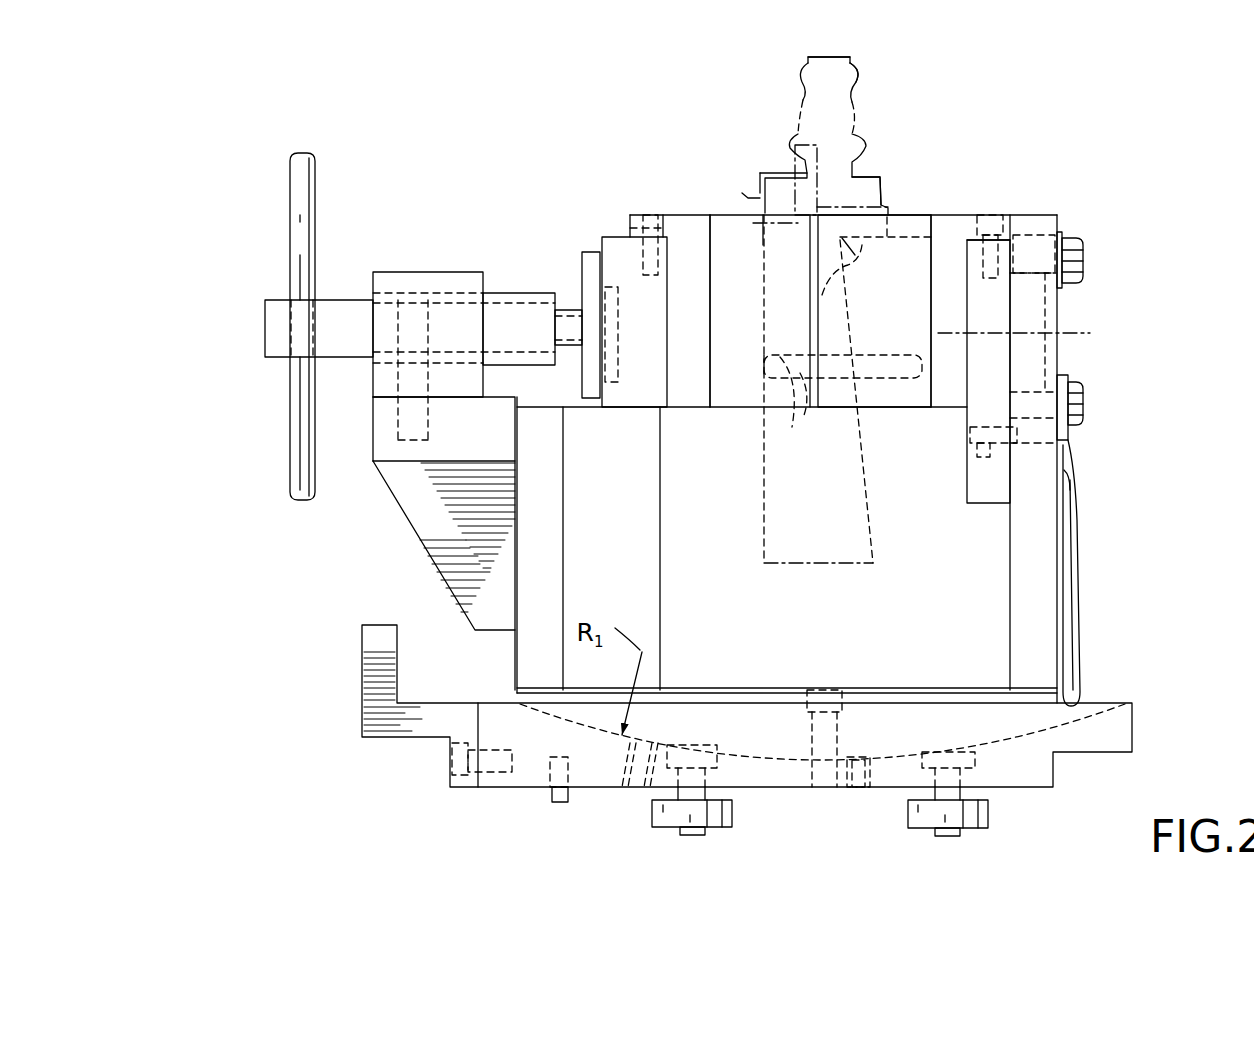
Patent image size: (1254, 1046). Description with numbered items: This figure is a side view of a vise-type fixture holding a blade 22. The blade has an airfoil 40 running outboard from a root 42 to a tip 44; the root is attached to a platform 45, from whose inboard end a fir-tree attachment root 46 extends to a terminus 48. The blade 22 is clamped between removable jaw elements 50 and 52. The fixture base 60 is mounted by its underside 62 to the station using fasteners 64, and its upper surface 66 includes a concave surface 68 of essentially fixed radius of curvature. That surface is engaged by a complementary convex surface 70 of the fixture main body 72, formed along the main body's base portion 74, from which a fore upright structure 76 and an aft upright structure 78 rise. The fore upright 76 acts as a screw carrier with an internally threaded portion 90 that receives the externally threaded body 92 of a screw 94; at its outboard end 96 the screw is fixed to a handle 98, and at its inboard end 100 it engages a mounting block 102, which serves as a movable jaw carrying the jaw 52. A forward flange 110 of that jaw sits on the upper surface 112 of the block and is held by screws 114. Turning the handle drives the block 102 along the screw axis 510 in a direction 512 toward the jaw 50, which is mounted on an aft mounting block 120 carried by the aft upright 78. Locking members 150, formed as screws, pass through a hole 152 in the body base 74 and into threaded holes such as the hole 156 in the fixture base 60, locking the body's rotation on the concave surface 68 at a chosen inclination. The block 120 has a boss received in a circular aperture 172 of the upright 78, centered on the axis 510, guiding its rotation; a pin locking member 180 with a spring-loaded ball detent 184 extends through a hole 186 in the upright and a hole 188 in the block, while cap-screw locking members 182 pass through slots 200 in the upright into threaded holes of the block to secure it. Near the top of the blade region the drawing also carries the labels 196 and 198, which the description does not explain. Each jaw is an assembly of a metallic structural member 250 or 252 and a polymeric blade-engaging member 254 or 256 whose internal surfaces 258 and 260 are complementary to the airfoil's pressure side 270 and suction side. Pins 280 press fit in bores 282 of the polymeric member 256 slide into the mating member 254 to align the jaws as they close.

The blade 22 is at (885, 108).
The airfoil 40 is at (873, 565).
The root 42 is at (845, 240).
The tip 44 is at (842, 565).
The platform 45 is at (880, 205).
The attachment root 46 is at (848, 130).
The terminus 48 is at (830, 55).
The jaw element 50 is at (912, 240).
The jaw element 52 is at (690, 225).
The fixture base 60 is at (500, 752).
The underside 62 is at (785, 790).
The fasteners 64 is at (690, 763).
The upper surface 66 is at (490, 702).
The concave surface 68 is at (740, 750).
The convex surface 70 is at (1003, 735).
The fixture main body 72 is at (1050, 698).
The base portion 74 is at (893, 697).
The fore upright structure 76 is at (542, 586).
The aft upright structure 78 is at (1032, 665).
The internally threaded portion 90 is at (440, 305).
The externally threaded body 92 is at (508, 293).
The screw 94 is at (493, 308).
The outboard end 96 is at (258, 288).
The handle 98 is at (307, 233).
The inboard end 100 is at (606, 322).
The mounting block 102 is at (660, 400).
The forward flange 110 is at (597, 224).
The upper surface 112 is at (598, 228).
The screws 114 is at (650, 213).
The aft mounting block 120 is at (970, 317).
The locking members 150 is at (815, 690).
The hole 152 is at (832, 735).
The hole 156 is at (868, 765).
The circular aperture 172 is at (840, 546).
The locking member 180 is at (1068, 412).
The locking members 182 is at (1090, 243).
The spring-loaded ball detent 184 is at (996, 420).
The hole 186 is at (1062, 480).
The hole 188 is at (980, 493).
The retainer 196 is at (742, 212).
The retainer clip 198 is at (753, 195).
The slots 200 is at (1025, 235).
The metallic structural member 250 is at (945, 398).
The metallic structural member 252 is at (688, 412).
The polymeric blade-engaging member 254 is at (882, 400).
The polymeric blade-engaging member 256 is at (738, 410).
The internal surface 258 is at (822, 322).
The internal surface 260 is at (770, 280).
The pressure side 270 is at (775, 548).
The pins 280 is at (843, 403).
The bores 282 is at (795, 467).
The screw axis 510 is at (1093, 332).
The direction 512 is at (462, 182).